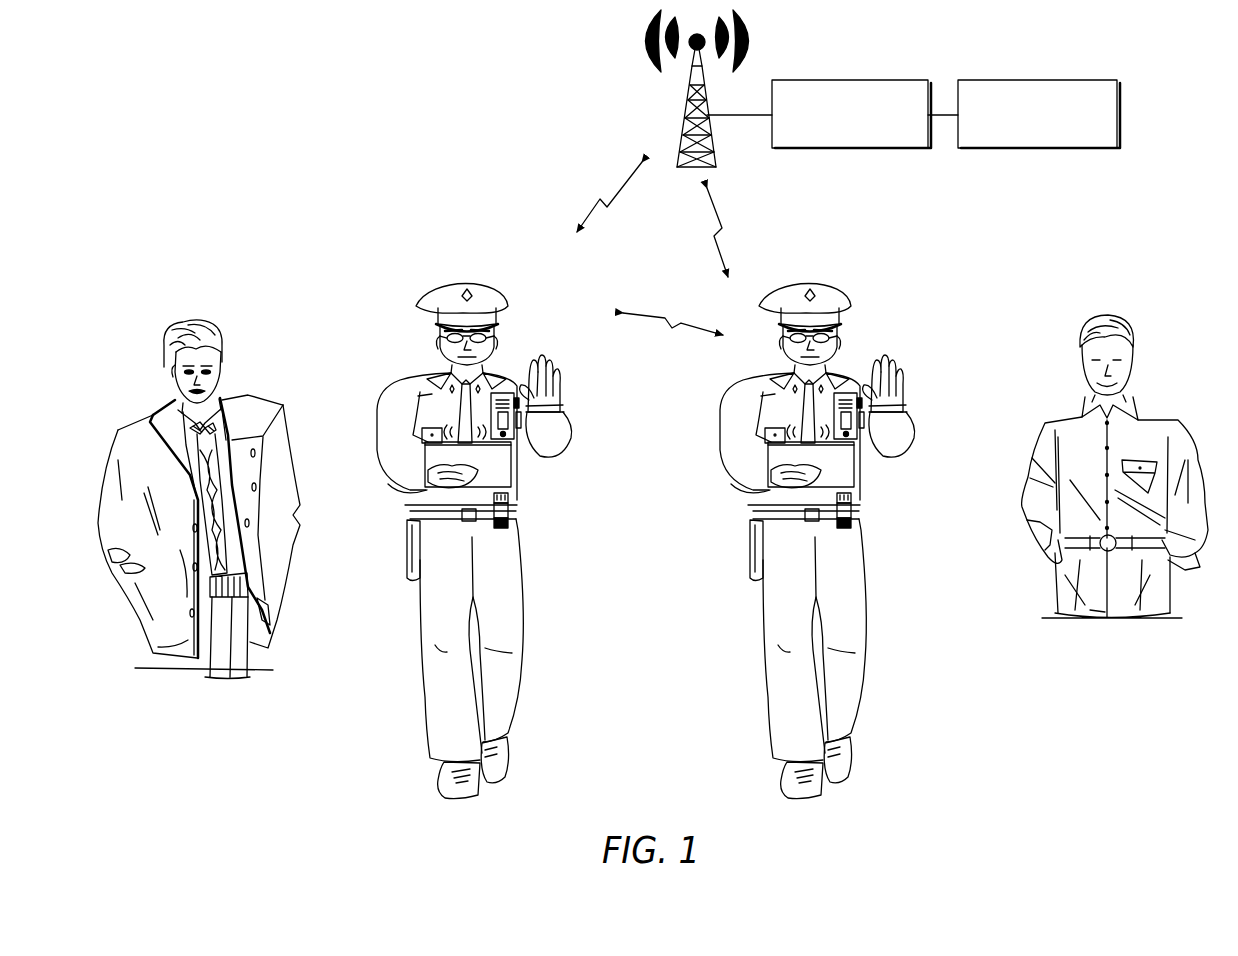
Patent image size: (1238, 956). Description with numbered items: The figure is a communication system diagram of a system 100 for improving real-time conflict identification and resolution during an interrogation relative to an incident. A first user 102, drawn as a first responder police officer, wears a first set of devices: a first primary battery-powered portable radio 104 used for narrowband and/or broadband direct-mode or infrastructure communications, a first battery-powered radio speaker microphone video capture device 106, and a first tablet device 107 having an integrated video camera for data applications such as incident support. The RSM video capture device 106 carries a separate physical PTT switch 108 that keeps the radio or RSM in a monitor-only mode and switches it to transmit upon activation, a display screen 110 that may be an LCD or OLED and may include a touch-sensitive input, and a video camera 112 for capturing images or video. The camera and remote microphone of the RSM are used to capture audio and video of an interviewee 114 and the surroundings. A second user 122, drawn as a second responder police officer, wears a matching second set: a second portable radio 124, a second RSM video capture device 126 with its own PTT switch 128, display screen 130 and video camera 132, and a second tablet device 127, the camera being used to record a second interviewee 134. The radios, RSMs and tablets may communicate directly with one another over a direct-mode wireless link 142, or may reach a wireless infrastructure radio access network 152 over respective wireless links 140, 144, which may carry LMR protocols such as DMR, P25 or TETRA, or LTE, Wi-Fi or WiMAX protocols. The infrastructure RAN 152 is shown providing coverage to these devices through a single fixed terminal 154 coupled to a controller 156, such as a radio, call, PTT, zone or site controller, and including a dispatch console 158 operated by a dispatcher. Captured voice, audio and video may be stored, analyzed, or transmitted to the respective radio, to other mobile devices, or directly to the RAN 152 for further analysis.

The system 100 is at (229, 100).
The first user 102 is at (526, 359).
The first primary battery-powered portable radio 104 is at (508, 500).
The first battery-powered radio speaker microphone (RSM) video capture device 106 is at (514, 393).
The first tablet device 107 is at (422, 507).
The PTT switch 108 is at (519, 396).
The display screen 110 is at (523, 418).
The video camera 112 is at (506, 435).
The interviewee 114 is at (190, 322).
The second user 122 is at (869, 362).
The second primary battery-powered portable radio 124 is at (851, 500).
The second battery-powered RSM video capture device 126 is at (857, 393).
The second tablet device 127 is at (767, 505).
The PTT switch 128 is at (862, 396).
The display screen 130 is at (866, 418).
The video camera 132 is at (849, 435).
The interviewee 134 is at (1107, 315).
The wireless link 140 is at (619, 196).
The direct-mode wireless link 142 is at (663, 312).
The wireless link 144 is at (717, 212).
The wireless infrastructure radio access network (RAN) 152 is at (622, 50).
The fixed terminal 154 is at (683, 130).
The controller 156 is at (852, 80).
The dispatch console 158 is at (1040, 80).